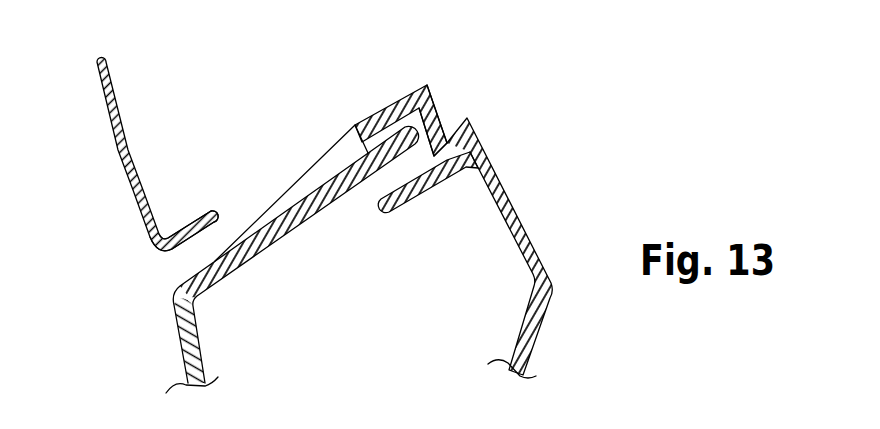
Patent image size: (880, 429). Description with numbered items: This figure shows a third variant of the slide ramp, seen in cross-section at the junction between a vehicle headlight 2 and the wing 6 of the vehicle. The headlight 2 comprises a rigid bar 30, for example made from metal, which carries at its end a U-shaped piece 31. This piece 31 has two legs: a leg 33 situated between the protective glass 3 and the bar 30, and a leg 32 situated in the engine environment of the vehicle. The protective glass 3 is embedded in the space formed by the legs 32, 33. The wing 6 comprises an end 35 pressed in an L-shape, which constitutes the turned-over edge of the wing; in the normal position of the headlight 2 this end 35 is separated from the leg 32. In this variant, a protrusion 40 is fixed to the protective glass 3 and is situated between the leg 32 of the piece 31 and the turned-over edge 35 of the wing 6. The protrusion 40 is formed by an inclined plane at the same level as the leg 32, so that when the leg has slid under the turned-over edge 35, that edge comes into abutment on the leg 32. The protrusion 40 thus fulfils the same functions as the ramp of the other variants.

The headlight 2 is at (489, 204).
The protective glass 3 is at (266, 256).
The wing 6 is at (129, 154).
The rigid bar 30 is at (510, 212).
The U-shaped piece 31 is at (440, 98).
The leg 32 is at (402, 104).
The leg 33 is at (433, 182).
The turned-over edge 35 is at (180, 229).
The protrusion 40 is at (322, 152).